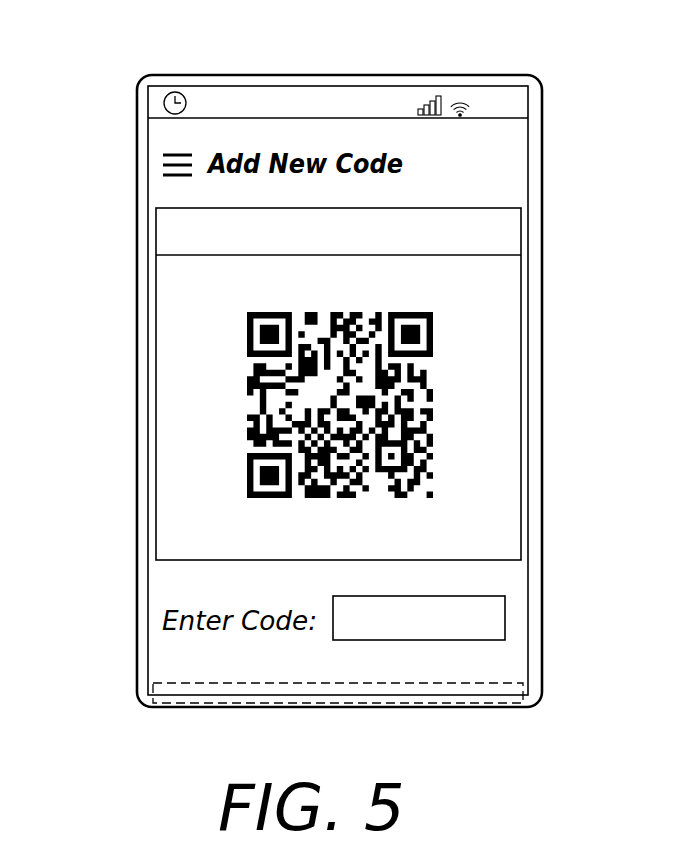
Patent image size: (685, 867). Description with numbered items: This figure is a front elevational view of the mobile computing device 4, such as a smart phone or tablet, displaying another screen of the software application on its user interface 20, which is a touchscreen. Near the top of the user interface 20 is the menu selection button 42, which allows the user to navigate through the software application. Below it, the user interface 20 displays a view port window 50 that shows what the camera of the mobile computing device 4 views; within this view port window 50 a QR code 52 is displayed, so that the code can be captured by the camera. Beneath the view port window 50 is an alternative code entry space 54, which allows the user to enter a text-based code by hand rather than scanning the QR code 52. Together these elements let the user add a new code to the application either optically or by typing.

The mobile computing device 4 is at (563, 87).
The user interface 20 is at (510, 172).
The menu selection button 42 is at (167, 153).
The view port window 50 is at (502, 377).
The QR code 52 is at (225, 353).
The alternative code entry space 54 is at (432, 632).